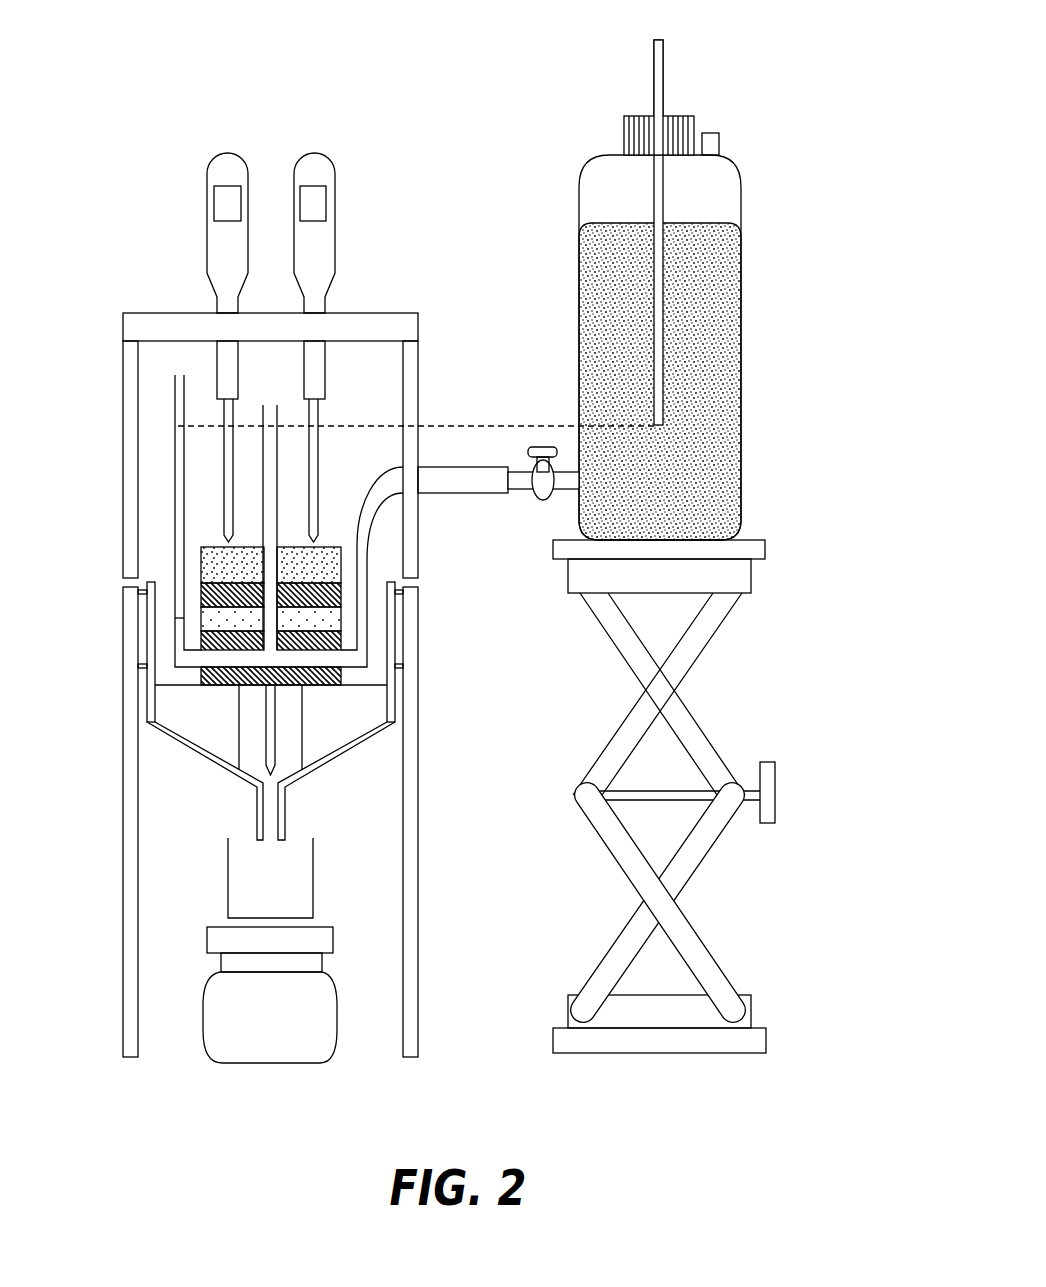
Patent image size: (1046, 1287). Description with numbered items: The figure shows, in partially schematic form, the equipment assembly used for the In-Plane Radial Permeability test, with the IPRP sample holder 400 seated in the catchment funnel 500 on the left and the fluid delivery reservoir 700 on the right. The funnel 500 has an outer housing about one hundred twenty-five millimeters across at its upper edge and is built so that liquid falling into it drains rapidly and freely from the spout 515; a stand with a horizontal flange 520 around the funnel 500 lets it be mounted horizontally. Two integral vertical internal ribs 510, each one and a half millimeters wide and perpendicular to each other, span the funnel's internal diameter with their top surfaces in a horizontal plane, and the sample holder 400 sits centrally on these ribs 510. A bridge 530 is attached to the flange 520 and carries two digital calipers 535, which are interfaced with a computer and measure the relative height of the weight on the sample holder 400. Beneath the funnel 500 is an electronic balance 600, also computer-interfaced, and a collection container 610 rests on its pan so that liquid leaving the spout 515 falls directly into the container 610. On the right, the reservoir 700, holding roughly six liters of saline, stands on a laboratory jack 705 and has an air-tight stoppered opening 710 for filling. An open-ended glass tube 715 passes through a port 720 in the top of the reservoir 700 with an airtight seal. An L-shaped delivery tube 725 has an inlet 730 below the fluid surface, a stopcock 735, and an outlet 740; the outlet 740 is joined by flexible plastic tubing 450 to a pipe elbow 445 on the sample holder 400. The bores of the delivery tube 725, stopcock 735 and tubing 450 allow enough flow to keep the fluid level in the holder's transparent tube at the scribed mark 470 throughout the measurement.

The IPRP sample holder 400 is at (203, 536).
The pipe elbow 445 is at (365, 650).
The flexible plastic tubing 450 is at (458, 490).
The scribed mark 470 is at (178, 425).
The catchment funnel 500 is at (333, 760).
The vertical internal rib 510 is at (267, 710).
The spout 515 is at (259, 810).
The horizontal flange 520 is at (123, 683).
The bridge 530 is at (175, 318).
The digital caliper 535 is at (204, 162).
The electronic balance 600 is at (199, 1041).
The collection container 610 is at (313, 873).
The fluid delivery reservoir 700 is at (620, 300).
The laboratory jack 705 is at (776, 1045).
The air-tight stoppered opening 710 is at (713, 132).
The open-ended glass tube 715 is at (654, 180).
The port 720 is at (642, 115).
The L-shaped delivery tube 725 is at (563, 470).
The inlet 730 is at (574, 495).
The stopcock 735 is at (543, 447).
The outlet 740 is at (520, 470).